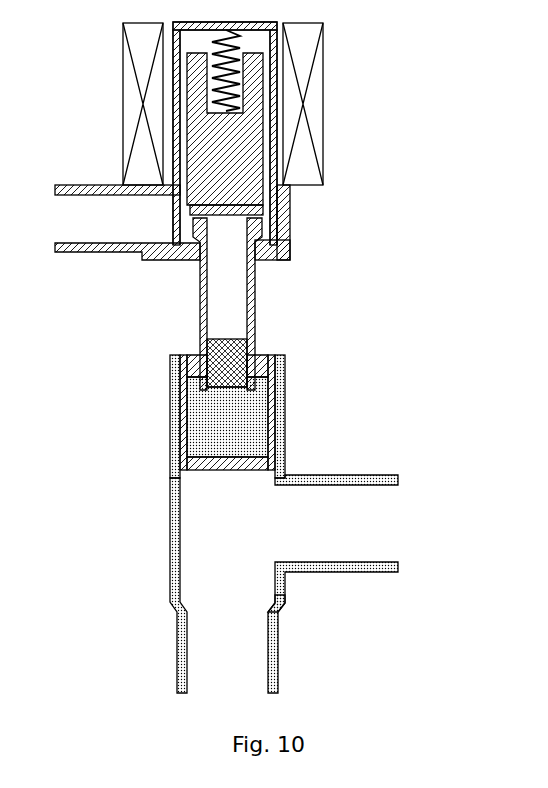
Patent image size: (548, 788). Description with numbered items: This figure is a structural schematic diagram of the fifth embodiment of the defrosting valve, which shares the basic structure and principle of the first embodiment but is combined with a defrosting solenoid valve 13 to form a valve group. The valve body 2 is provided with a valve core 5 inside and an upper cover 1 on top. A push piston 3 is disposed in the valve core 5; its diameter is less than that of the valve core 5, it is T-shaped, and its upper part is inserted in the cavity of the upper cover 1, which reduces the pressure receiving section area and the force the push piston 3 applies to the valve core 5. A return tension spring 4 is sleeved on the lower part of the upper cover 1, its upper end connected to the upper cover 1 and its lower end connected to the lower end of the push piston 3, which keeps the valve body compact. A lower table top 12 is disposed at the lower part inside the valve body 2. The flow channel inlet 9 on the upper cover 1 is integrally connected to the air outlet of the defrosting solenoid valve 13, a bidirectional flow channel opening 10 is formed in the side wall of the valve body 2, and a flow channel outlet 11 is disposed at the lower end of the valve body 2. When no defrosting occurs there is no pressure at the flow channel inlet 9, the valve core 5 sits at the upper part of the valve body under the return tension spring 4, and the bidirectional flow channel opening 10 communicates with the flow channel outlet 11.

The upper cover 1 is at (224, 392).
The valve body 2 is at (285, 400).
The push piston 3 is at (193, 368).
The return tension spring 4 is at (197, 418).
The valve core 5 is at (190, 468).
The flow channel inlet 9 is at (235, 325).
The bidirectional flow channel opening 10 is at (327, 515).
The flow channel outlet 11 is at (247, 668).
The lower table top 12 is at (278, 612).
The defrosting solenoid valve 13 is at (232, 180).